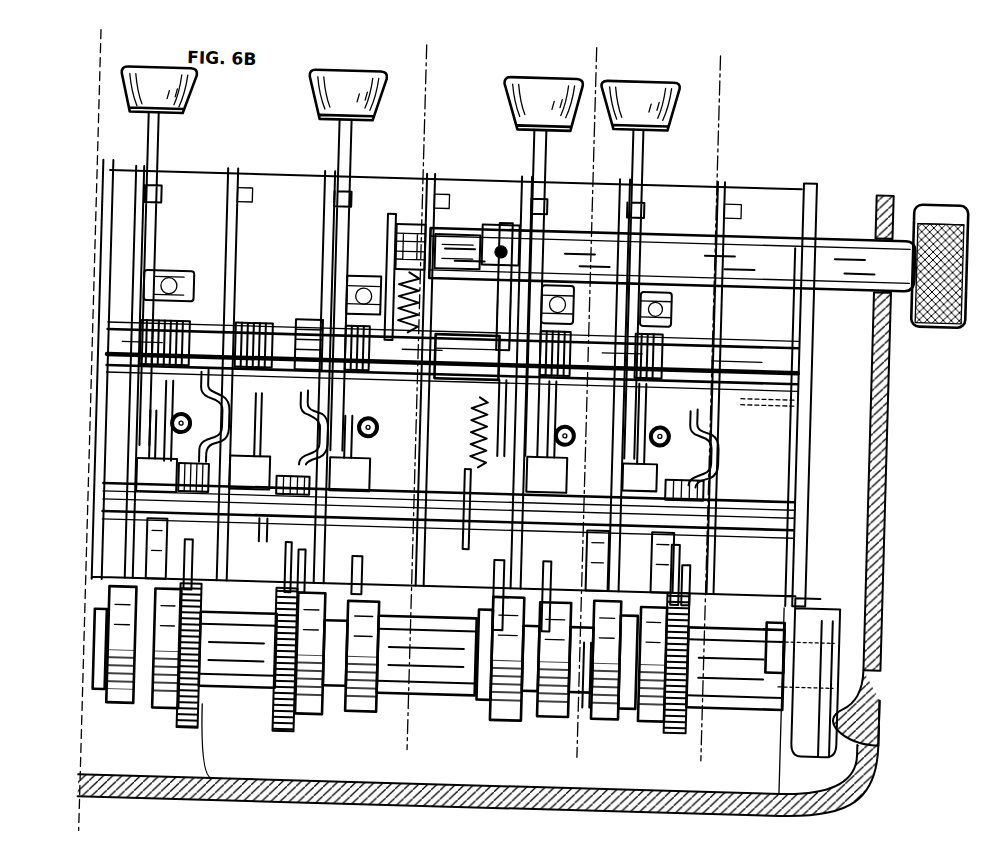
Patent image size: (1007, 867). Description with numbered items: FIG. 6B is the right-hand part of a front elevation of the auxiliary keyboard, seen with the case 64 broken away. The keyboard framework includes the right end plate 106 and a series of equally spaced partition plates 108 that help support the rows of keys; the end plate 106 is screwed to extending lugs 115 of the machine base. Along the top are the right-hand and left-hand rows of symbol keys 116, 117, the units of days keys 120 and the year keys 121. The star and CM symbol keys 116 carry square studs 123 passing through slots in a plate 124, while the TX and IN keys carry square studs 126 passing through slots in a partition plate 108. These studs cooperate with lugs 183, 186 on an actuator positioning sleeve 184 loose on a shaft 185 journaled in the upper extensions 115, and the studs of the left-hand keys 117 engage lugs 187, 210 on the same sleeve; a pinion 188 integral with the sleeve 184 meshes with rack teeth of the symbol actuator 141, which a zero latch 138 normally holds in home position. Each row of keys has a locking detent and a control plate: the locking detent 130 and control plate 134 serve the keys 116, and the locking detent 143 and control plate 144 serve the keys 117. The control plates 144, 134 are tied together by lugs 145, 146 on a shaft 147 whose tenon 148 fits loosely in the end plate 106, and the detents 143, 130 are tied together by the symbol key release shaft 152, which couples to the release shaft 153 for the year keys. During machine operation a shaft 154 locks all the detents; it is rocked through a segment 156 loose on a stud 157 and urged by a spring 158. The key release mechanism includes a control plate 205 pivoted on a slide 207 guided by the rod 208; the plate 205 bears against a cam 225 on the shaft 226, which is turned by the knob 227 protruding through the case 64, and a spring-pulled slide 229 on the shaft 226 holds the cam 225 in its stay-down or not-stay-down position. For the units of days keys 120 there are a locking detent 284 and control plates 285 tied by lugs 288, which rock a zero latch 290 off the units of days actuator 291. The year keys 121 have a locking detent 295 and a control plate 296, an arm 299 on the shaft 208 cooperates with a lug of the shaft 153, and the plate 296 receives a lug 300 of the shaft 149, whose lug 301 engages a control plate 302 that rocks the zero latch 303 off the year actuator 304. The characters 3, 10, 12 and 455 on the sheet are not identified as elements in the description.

The section line 3 is at (690, 57).
The section line 10 is at (568, 57).
The section line 12 is at (400, 57).
The case 64 is at (888, 352).
The right end plate 106 is at (798, 184).
The partition plates 108 is at (318, 181).
The extending lugs 115 is at (789, 752).
The symbol keys 116 is at (650, 78).
The symbol keys 117 is at (541, 77).
The units of days keys 120 is at (169, 77).
The year keys 121 is at (348, 77).
The square stud 123 is at (666, 548).
The plate 124 is at (632, 575).
The square stud 126 is at (595, 553).
The locking detent 130 is at (640, 438).
The control plate 134 is at (625, 472).
The zero latch 138 is at (700, 418).
The symbol actuator 141 is at (695, 572).
The locking detent 143 is at (547, 437).
The control plate 144 is at (556, 440).
The lug 145 is at (518, 488).
The lug 146 is at (700, 460).
The shaft 147 is at (453, 500).
The tenon 148 is at (800, 500).
The shaft 149 is at (268, 545).
The symbol key release shaft 152 is at (762, 392).
The release shaft 153 is at (170, 310).
The shaft 154 is at (800, 406).
The segment 156 is at (390, 250).
The stud 157 is at (386, 238).
The spring 158 is at (395, 320).
The lug 183 is at (634, 716).
The actuator positioning sleeve 184 is at (482, 626).
The shaft 185 is at (815, 620).
The lug 186 is at (590, 720).
The lug 187 is at (552, 575).
The pinion 188 is at (690, 733).
The control plate 205 is at (492, 322).
The slide 207 is at (470, 428).
The rod 208 is at (765, 340).
The lug 210 is at (500, 595).
The cam 225 is at (492, 296).
The shaft 226 is at (690, 238).
The knob 227 is at (936, 316).
The spring-pulled slide 229 is at (500, 225).
The locking detent 284 is at (157, 451).
The control plate 285 is at (200, 420).
The lugs 288 is at (168, 548).
The zero latch 290 is at (205, 345).
The units of days actuator 291 is at (200, 572).
The locking detent 295 is at (360, 450).
The control plate 296 is at (360, 470).
The arm 299 is at (300, 330).
The lug 300 is at (372, 487).
The lug 301 is at (268, 520).
The control plate 302 is at (250, 441).
The zero latch 303 is at (256, 458).
The year actuator 304 is at (280, 578).
The pivot pin 455 is at (376, 430).